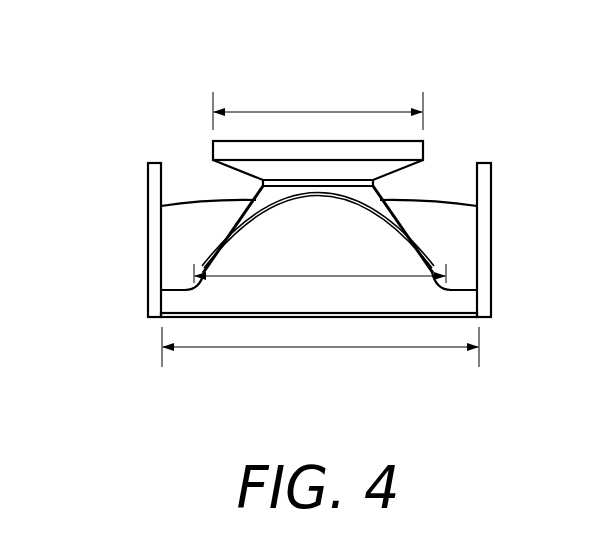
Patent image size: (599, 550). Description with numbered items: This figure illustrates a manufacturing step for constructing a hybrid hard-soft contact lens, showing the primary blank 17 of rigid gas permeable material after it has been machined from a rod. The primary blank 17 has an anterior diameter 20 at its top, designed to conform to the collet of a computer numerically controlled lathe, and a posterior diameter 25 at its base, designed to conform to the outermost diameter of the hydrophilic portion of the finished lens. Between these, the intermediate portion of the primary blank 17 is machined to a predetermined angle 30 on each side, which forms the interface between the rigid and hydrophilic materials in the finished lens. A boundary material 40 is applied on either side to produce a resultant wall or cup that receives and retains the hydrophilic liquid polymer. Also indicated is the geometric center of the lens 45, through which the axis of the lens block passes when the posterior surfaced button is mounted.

The primary blank 17 is at (290, 234).
The anterior diameter 20 is at (317, 110).
The posterior diameter 25 is at (403, 349).
The predetermined angle 30 is at (210, 267).
The boundary material 40 is at (148, 232).
The geometric center of the lens 45 is at (433, 270).